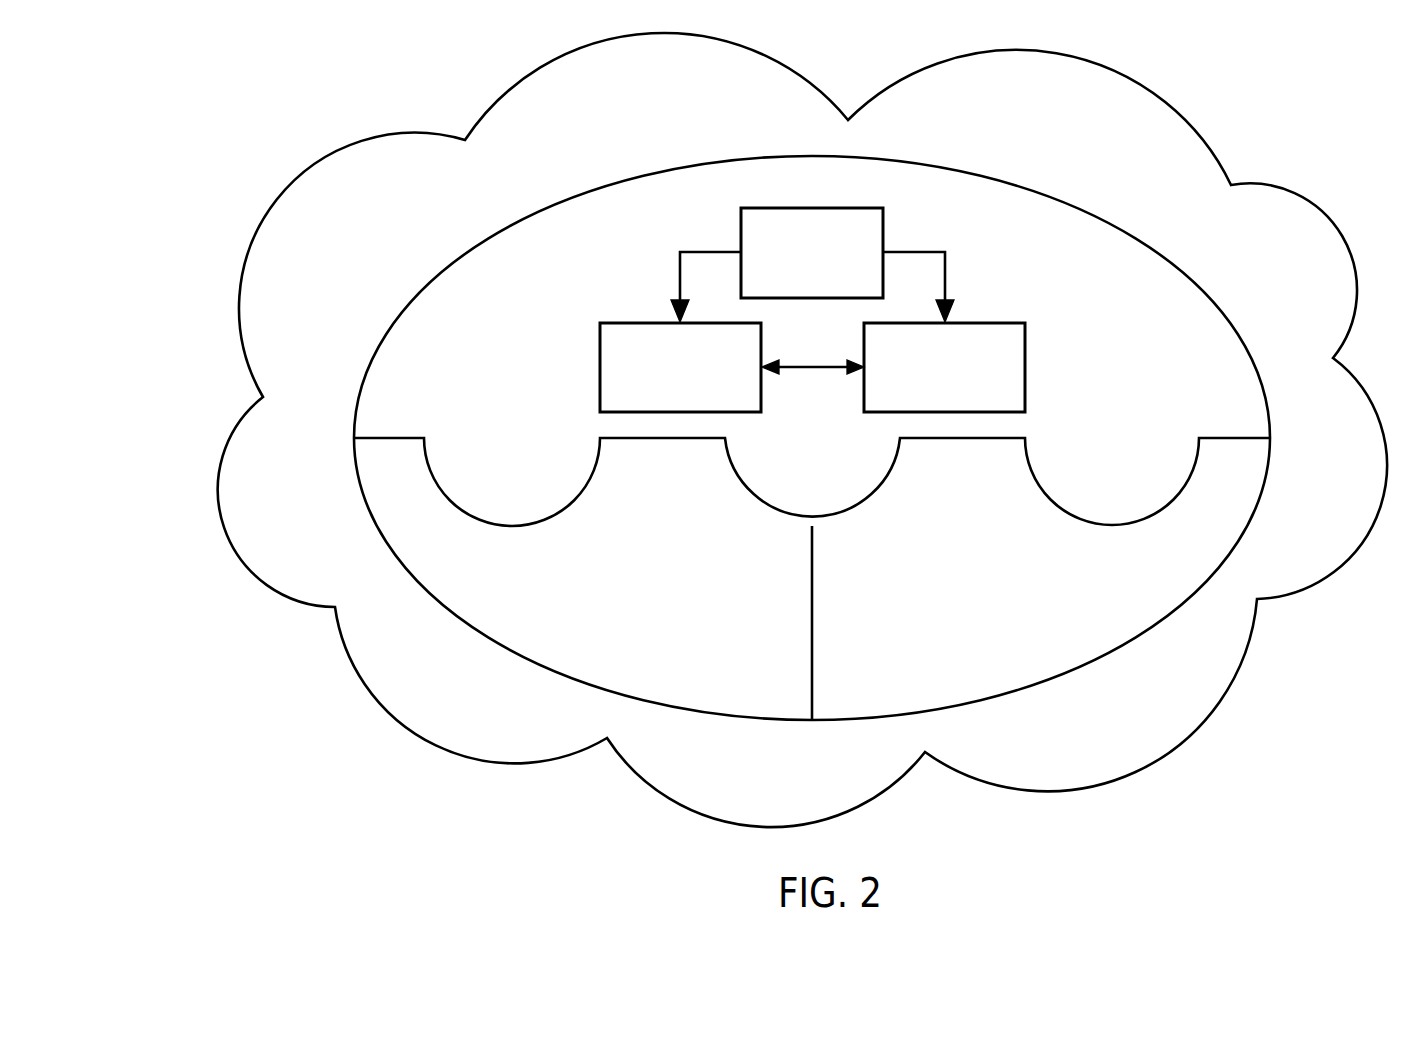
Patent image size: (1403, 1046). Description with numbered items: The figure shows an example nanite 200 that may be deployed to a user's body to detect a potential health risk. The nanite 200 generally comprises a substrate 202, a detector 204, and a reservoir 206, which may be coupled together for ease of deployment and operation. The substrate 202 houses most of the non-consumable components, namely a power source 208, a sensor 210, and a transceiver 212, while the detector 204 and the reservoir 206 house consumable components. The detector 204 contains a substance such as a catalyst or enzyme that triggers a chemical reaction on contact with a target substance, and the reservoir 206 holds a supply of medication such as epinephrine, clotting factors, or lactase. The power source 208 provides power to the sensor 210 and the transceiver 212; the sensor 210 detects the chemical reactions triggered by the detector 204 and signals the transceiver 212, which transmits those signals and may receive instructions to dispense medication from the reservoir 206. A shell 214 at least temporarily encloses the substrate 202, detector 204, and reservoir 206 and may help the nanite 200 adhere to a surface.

The nanite 200 is at (168, 42).
The substrate 202 is at (794, 482).
The detector 204 is at (626, 604).
The reservoir 206 is at (943, 604).
The power source 208 is at (793, 279).
The sensor 210 is at (661, 394).
The transceiver 212 is at (927, 394).
The shell 214 is at (680, 92).